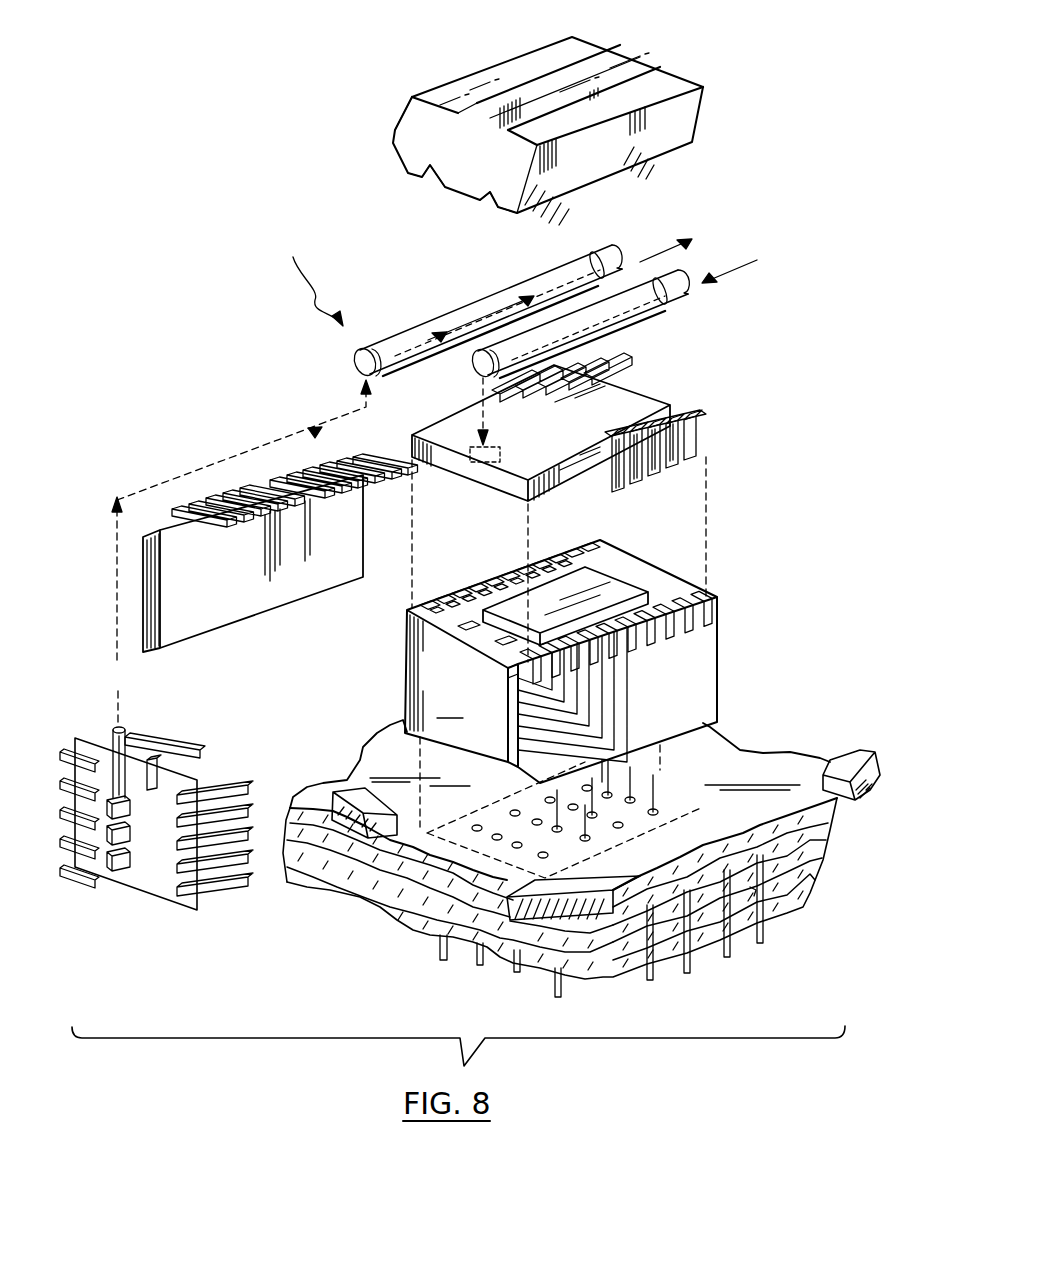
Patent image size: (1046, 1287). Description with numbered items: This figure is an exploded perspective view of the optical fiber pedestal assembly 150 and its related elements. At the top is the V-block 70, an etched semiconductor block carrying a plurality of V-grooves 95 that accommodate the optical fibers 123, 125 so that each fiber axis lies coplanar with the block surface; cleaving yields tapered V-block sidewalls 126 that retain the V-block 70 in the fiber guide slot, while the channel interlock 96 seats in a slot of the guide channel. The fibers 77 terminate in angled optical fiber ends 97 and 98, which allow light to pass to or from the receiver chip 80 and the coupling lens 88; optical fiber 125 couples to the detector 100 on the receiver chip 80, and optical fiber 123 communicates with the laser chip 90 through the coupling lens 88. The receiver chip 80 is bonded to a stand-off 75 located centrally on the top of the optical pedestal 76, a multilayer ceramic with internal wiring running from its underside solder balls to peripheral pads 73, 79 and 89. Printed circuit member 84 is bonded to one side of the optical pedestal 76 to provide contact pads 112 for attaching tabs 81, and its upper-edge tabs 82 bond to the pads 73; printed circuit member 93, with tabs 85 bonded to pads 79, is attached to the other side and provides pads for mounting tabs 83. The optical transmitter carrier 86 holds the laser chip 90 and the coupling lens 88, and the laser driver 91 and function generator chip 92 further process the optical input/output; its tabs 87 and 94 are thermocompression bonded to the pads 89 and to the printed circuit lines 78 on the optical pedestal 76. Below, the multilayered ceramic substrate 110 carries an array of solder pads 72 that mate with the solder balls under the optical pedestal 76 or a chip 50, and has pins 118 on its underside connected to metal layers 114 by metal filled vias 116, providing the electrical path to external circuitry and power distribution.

The V-block 70 is at (708, 100).
The channel interlock 96 is at (490, 110).
The tapered V-block sidewalls 126 is at (394, 132).
The V-grooves 95 is at (482, 200).
The coolant tubes 77 is at (455, 308).
The angled optical fiber end 97 is at (350, 358).
The angled optical fiber end 98 is at (470, 375).
The optical fiber 123 is at (622, 255).
The optical fiber 125 is at (700, 268).
The optical fiber pedestal assembly 150 is at (276, 255).
The receiver chip 80 is at (648, 400).
The detector 100 is at (505, 455).
The tabs 83 is at (585, 372).
The tabs 81 is at (702, 440).
The printed circuit member 93 is at (143, 562).
The tabs 85 is at (238, 492).
The optical pedestal 76 is at (705, 585).
The pads 79 is at (440, 608).
The stand-off 75 is at (590, 575).
The pads 89 is at (500, 645).
The pads 73 is at (512, 660).
The tabs 82 is at (668, 600).
The contact pads 112 is at (676, 635).
The printed circuit member 84 is at (722, 640).
The printed circuit lines 78 is at (612, 716).
The multilayered ceramic substrate 110 is at (805, 888).
The metal layers 114 is at (812, 855).
The metal filled vias 116 is at (752, 892).
The pins 118 is at (728, 962).
The solder pads 72 is at (652, 812).
The chip 50 is at (852, 760).
The optical transmitter carrier 86 is at (200, 772).
The tabs 94 is at (62, 825).
The coupling lens 88 is at (112, 745).
The tabs 87 is at (162, 742).
The laser chip 90 is at (131, 808).
The laser driver 91 is at (131, 835).
The function generator chip 92 is at (120, 870).